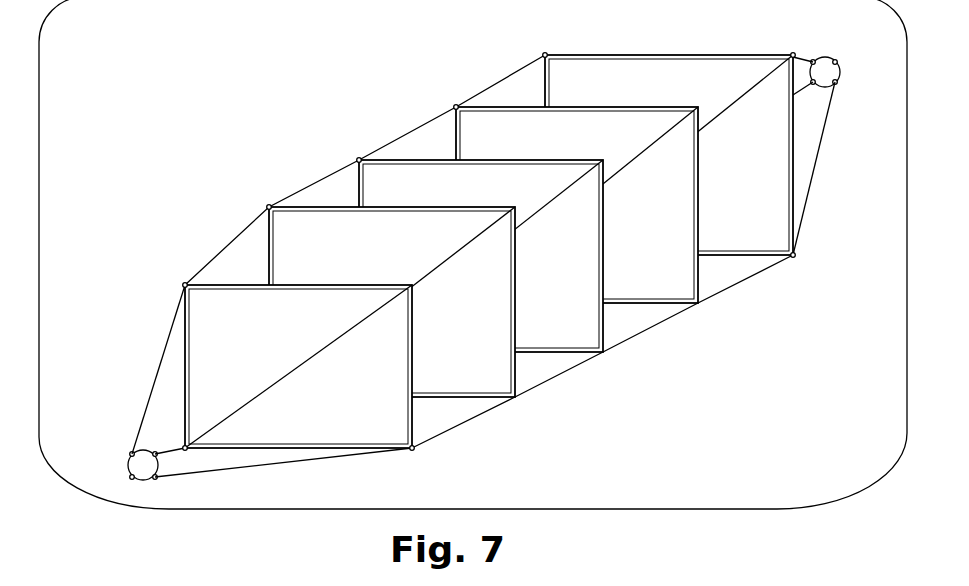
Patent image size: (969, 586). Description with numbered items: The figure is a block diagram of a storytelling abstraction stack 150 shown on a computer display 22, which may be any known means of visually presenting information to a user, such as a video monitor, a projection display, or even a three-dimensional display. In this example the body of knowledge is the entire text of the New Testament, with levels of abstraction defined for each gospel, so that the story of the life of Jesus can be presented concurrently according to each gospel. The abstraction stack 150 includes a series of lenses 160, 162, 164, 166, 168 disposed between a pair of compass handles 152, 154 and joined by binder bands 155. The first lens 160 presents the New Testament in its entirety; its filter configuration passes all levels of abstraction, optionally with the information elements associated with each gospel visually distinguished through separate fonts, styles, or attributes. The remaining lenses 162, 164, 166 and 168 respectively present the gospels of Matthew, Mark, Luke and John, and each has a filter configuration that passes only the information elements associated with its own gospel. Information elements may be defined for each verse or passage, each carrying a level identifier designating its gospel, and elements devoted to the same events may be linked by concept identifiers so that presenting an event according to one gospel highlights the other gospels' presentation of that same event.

The computer display 22 is at (846, 510).
The abstraction stack 150 is at (131, 113).
The compass handle 152 is at (821, 59).
The compass handle 154 is at (160, 474).
The binder bands 155 is at (834, 122).
The first lens 160 is at (385, 427).
The lens 162 is at (497, 372).
The lens 164 is at (597, 330).
The lens 166 is at (692, 276).
The lens 168 is at (779, 197).